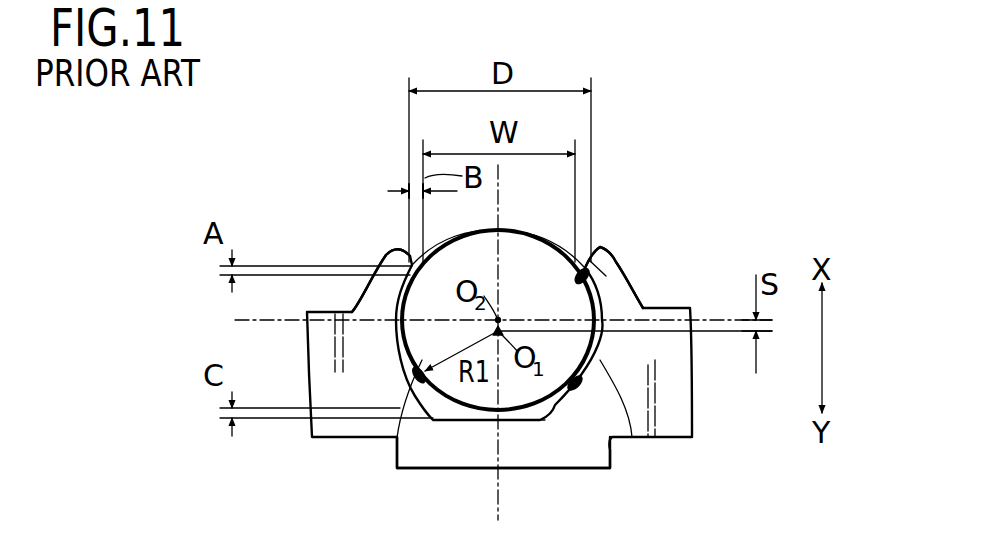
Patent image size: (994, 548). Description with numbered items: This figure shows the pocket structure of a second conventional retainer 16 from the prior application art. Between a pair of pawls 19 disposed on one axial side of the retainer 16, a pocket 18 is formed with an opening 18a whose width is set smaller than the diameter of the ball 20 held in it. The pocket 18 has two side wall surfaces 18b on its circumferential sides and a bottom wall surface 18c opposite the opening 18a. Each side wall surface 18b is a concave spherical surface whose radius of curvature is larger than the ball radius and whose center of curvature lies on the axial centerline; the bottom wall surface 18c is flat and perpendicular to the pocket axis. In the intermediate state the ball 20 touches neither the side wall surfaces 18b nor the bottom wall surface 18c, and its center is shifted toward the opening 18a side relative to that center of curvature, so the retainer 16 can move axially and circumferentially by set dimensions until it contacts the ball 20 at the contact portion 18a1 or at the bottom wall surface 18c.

The retainer 16 is at (316, 186).
The pocket 18 is at (560, 395).
The opening 18a is at (434, 249).
The groove upper contact portion 18a1 is at (592, 252).
The side wall surface 18b is at (412, 370).
The bottom wall surface 18c is at (540, 410).
The pawl 19 is at (397, 262).
The ball 20 is at (395, 440).